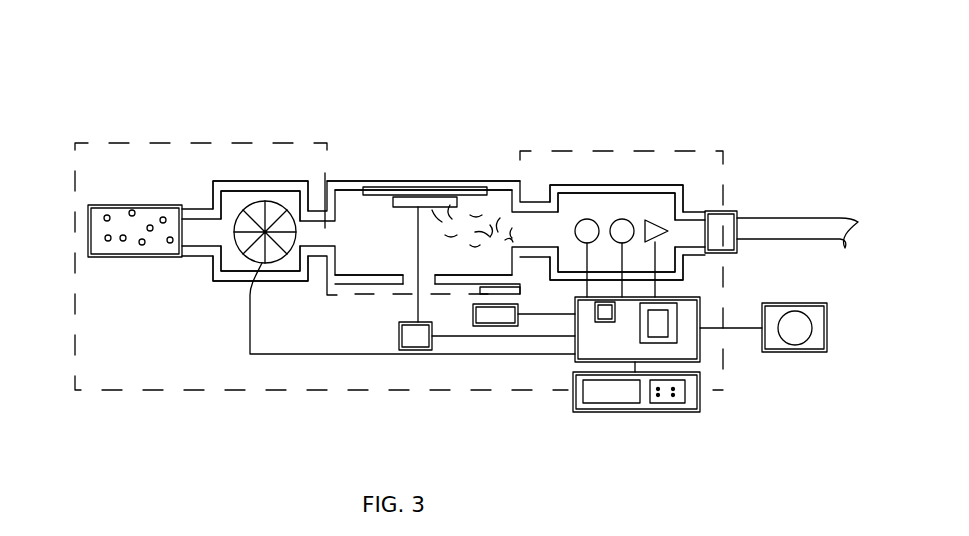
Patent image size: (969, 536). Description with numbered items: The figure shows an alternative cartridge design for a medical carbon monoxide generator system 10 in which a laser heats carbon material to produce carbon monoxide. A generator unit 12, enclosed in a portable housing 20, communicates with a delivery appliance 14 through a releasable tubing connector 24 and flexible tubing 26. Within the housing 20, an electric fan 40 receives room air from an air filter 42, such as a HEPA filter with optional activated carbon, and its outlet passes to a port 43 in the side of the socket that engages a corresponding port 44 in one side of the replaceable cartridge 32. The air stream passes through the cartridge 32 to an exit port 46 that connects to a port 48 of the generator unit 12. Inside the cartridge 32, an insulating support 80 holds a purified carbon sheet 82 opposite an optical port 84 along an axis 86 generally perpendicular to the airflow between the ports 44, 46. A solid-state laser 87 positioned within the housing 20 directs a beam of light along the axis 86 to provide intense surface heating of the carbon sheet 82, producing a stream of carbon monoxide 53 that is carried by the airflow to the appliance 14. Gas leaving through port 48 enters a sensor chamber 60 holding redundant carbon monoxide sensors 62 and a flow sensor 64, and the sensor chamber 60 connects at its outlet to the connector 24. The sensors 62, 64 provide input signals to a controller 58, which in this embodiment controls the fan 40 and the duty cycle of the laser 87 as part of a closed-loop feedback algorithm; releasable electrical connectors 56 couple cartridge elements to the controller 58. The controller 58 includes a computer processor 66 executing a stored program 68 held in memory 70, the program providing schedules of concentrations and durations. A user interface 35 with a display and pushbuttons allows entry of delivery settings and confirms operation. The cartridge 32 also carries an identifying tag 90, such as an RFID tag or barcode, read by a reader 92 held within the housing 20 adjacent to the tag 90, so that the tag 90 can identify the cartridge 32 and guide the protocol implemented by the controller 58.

The medical carbon monoxide generator system 10 is at (824, 93).
The generator unit 12 is at (768, 130).
The delivery appliance 14 is at (866, 248).
The housing 20 is at (122, 142).
The releasable tubing connector 24 is at (727, 211).
The flexible tubing 26 is at (785, 224).
The replaceable cartridge 32 is at (466, 104).
The user interface 35 is at (701, 393).
The electric fan 40 is at (248, 181).
The air filter 42 is at (151, 205).
The port 43 is at (309, 175).
The port 44 is at (334, 175).
The exit port 46 is at (531, 170).
The port 48 is at (551, 170).
The carbon monoxide 53 is at (491, 215).
The releasable electrical connectors 56 is at (328, 310).
The controller 58 is at (701, 357).
The sensor chamber 60 is at (677, 265).
The carbon monoxide sensors 62 is at (622, 219).
The flow sensor 64 is at (646, 222).
The computer processor 66 is at (603, 313).
The stored program 68 is at (663, 330).
The memory 70 is at (679, 313).
The insulating support 80 is at (383, 182).
The purified carbon sheet 82 is at (420, 187).
The optical port 84 is at (388, 305).
The axis 86 is at (417, 250).
The solid-state laser 87 is at (418, 337).
The identifying tag 90 is at (467, 326).
The reader 92 is at (483, 290).